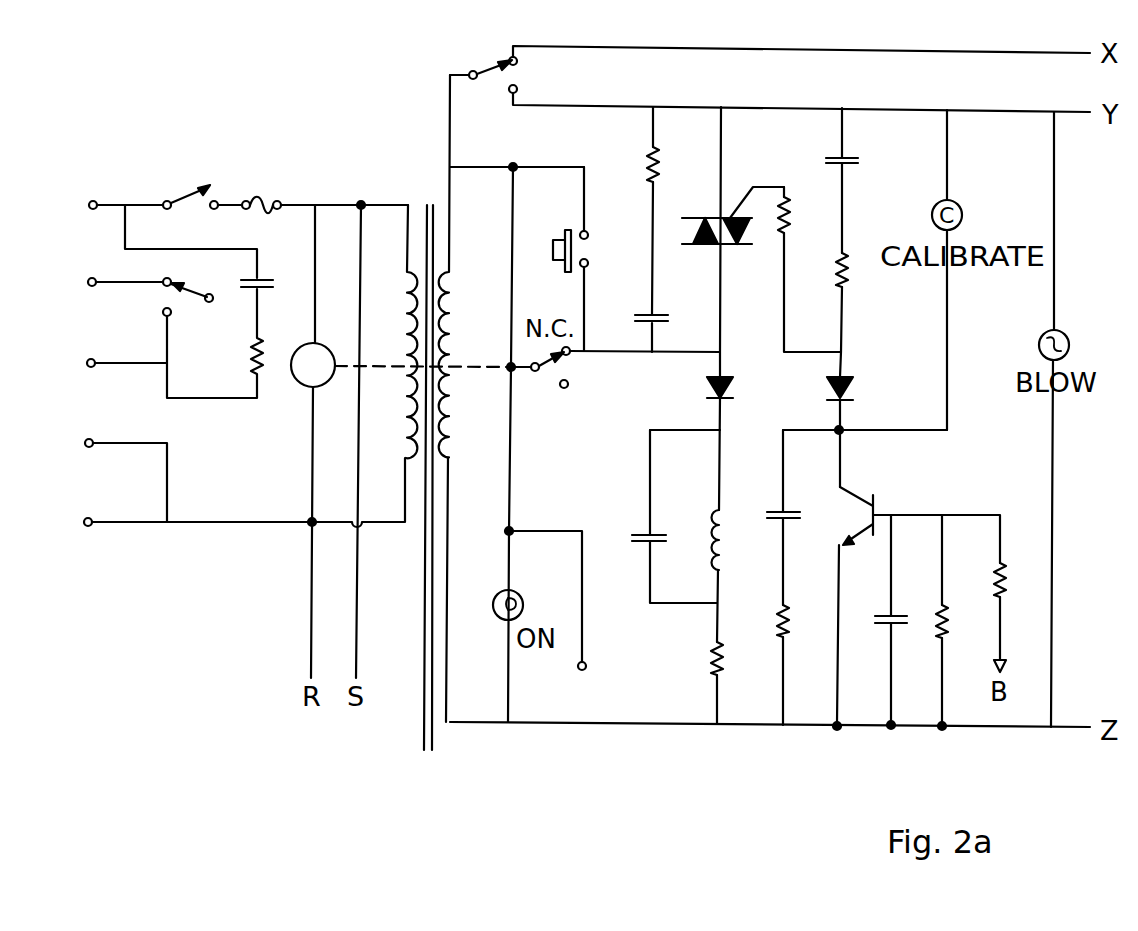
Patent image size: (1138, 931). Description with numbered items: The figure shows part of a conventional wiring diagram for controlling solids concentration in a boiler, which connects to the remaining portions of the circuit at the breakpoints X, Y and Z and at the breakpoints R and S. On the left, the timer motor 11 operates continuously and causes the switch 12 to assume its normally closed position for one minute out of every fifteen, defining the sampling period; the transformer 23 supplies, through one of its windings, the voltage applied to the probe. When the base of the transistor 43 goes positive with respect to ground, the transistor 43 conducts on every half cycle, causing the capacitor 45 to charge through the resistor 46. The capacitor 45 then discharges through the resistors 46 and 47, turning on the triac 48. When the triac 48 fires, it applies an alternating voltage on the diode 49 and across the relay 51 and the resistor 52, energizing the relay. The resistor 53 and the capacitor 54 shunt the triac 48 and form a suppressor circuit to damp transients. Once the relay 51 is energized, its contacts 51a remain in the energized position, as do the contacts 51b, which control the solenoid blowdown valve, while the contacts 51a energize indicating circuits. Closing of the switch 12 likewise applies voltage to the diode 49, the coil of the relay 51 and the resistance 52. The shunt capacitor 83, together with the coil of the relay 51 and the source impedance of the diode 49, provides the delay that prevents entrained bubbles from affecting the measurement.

The timer motor 11 is at (300, 386).
The switch 12 is at (555, 372).
The transformer 23 is at (427, 202).
The transistor 43 is at (858, 497).
The capacitor 45 is at (858, 157).
The resistor 46 is at (852, 275).
The resistor 47 is at (795, 226).
The triac 48 is at (745, 232).
The diode 49 is at (734, 386).
The relay 51 is at (732, 536).
The contacts 51a is at (502, 73).
The contacts 51b is at (178, 300).
The resistor 52 is at (727, 660).
The resistor 53 is at (660, 165).
The capacitor 54 is at (636, 318).
The shunt capacitor 83 is at (640, 533).